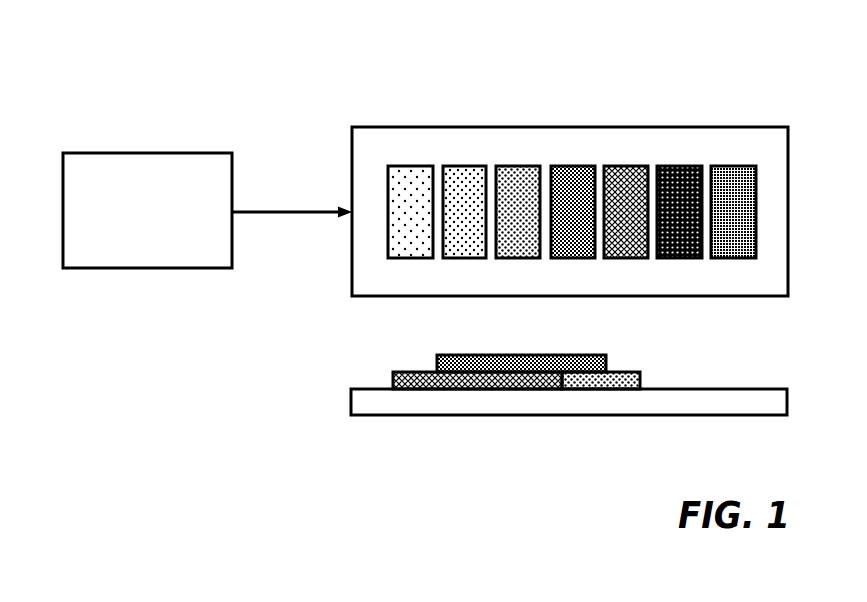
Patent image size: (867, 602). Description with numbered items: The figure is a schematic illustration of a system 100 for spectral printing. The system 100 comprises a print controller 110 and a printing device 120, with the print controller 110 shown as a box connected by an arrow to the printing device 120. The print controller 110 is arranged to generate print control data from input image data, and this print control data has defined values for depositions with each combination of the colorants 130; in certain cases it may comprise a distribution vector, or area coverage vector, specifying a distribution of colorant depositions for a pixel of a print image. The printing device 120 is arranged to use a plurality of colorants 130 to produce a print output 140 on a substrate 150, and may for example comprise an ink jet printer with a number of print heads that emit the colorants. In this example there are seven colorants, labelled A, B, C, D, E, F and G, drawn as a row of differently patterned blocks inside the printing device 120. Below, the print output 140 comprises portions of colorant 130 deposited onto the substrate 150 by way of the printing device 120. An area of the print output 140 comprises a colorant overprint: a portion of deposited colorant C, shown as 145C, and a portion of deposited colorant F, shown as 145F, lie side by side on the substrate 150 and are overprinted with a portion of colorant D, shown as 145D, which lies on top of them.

The system 100 is at (88, 81).
The print controller 110 is at (158, 153).
The printing device 120 is at (352, 252).
The plurality of colorants 130 is at (773, 79).
The colorant A is at (411, 166).
The colorant B is at (464, 166).
The colorant C is at (518, 166).
The colorant D is at (573, 166).
The colorant E is at (626, 166).
The colorant F is at (680, 166).
The colorant G is at (733, 166).
The print output 140 is at (340, 368).
The portion of deposited colorant F 145F is at (403, 372).
The portion of colorant D 145D is at (475, 355).
The portion of deposited colorant C 145C is at (623, 372).
The substrate 150 is at (760, 389).